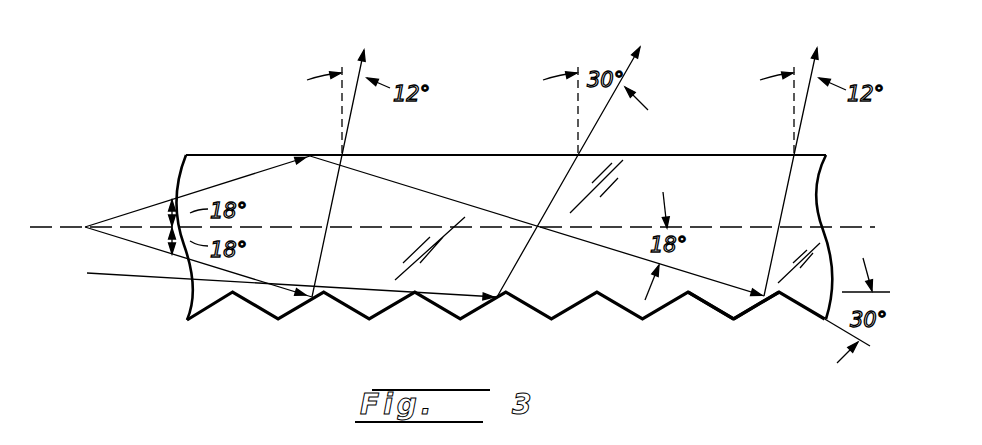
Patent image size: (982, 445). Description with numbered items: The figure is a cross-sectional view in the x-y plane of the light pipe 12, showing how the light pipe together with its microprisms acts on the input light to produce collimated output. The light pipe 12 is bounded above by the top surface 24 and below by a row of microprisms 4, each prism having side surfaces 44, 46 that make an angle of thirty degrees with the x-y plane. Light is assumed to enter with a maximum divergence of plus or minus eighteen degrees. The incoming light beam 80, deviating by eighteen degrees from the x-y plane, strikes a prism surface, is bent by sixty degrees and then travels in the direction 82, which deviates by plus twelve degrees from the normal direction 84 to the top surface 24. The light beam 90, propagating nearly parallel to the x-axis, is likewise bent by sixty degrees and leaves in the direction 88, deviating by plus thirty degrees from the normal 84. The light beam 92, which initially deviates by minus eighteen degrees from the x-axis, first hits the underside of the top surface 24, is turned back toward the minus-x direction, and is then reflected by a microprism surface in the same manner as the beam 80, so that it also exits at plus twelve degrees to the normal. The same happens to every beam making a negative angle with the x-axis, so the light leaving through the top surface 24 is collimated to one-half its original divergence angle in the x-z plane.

The microprisms 4 is at (558, 288).
The light pipe 12 is at (504, 200).
The top surface 24 is at (482, 155).
The side surface 44 is at (706, 304).
The side surface 46 is at (745, 313).
The incoming light beam 80 is at (115, 238).
The direction 82 is at (332, 201).
The normal direction 84 is at (342, 108).
The direction 88 is at (625, 72).
The light beam 90 is at (113, 275).
The light beam 92 is at (125, 212).